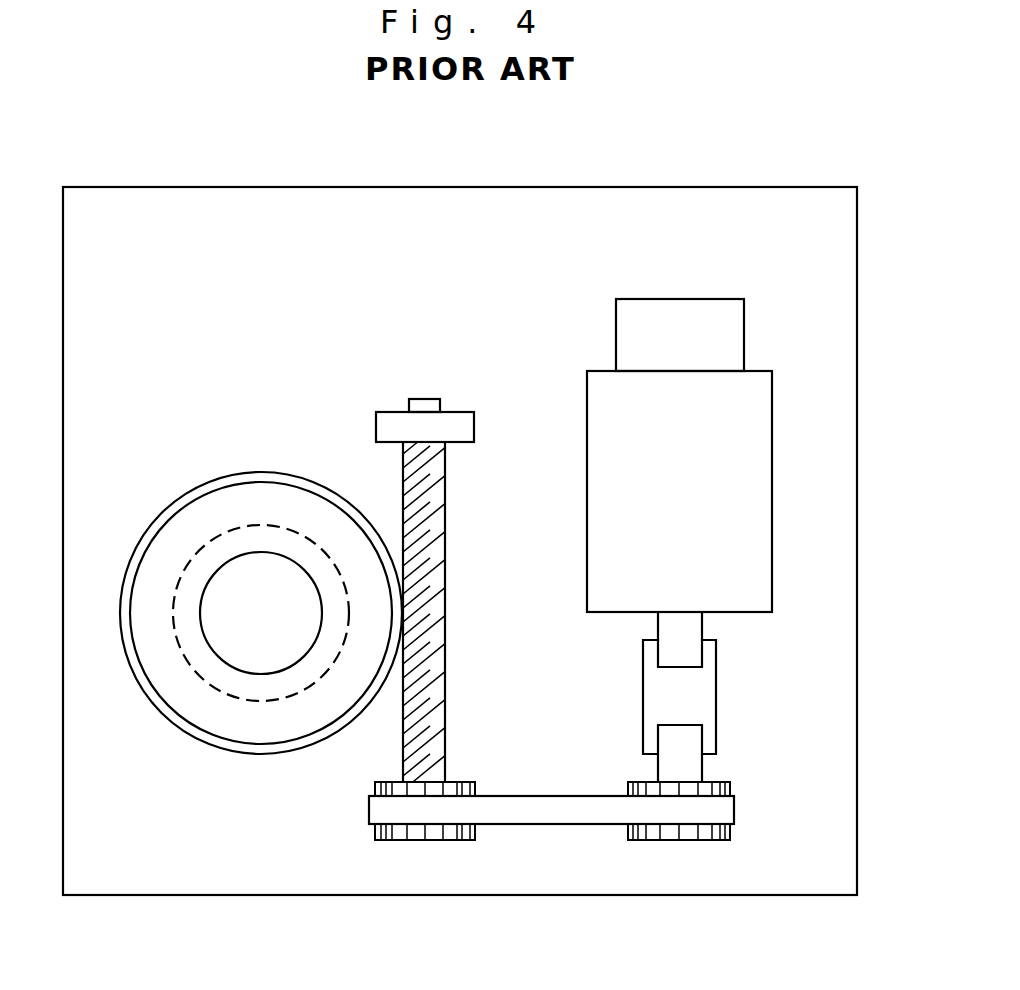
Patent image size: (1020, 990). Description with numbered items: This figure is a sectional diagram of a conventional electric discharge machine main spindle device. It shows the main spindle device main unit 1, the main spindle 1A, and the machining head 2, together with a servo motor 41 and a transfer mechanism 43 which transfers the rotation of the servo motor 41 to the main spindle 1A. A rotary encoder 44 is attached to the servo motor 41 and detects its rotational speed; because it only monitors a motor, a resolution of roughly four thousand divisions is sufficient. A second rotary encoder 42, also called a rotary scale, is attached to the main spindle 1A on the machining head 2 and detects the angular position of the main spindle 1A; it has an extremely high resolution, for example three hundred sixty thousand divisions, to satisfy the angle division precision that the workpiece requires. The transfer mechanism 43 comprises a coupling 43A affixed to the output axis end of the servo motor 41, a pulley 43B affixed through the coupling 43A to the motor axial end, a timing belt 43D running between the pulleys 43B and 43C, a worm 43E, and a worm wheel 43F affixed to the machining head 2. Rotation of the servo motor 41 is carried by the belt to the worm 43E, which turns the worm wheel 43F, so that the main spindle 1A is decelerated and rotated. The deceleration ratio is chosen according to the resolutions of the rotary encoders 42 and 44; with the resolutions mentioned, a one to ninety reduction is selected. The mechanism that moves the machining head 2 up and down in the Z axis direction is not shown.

The main spindle device main unit 1 is at (261, 526).
The main spindle 1A is at (248, 564).
The machining head 2 is at (234, 186).
The servo motor 41 is at (752, 604).
The rotary encoder 42 is at (233, 697).
The transfer mechanism 43 is at (546, 689).
The coupling 43A is at (708, 705).
The pulley 43B is at (643, 782).
The pulley 43C is at (395, 777).
The timing belt 43D is at (532, 818).
The worm 43E is at (447, 610).
The worm wheel 43F is at (276, 471).
The rotary encoder 44 is at (635, 305).